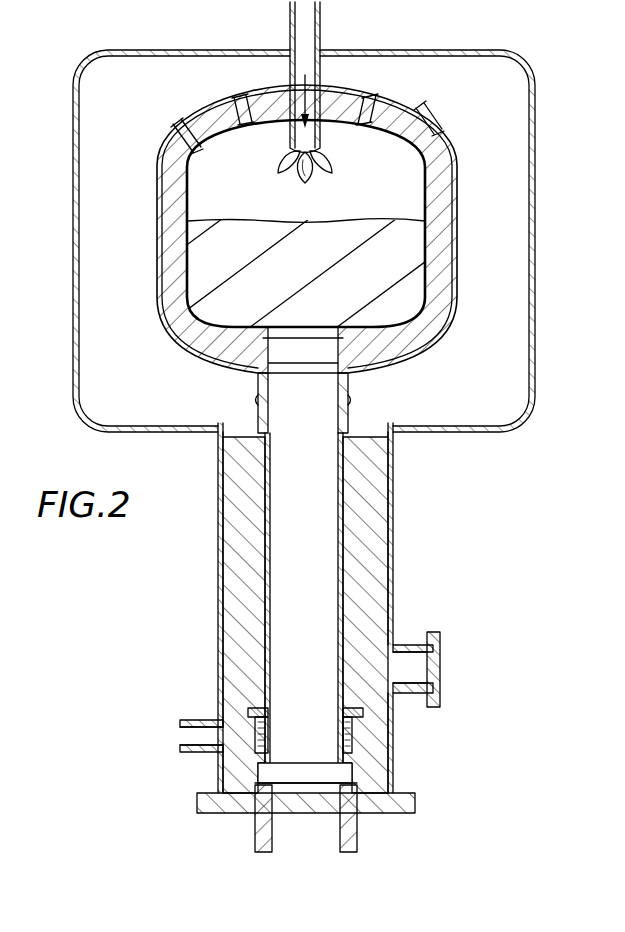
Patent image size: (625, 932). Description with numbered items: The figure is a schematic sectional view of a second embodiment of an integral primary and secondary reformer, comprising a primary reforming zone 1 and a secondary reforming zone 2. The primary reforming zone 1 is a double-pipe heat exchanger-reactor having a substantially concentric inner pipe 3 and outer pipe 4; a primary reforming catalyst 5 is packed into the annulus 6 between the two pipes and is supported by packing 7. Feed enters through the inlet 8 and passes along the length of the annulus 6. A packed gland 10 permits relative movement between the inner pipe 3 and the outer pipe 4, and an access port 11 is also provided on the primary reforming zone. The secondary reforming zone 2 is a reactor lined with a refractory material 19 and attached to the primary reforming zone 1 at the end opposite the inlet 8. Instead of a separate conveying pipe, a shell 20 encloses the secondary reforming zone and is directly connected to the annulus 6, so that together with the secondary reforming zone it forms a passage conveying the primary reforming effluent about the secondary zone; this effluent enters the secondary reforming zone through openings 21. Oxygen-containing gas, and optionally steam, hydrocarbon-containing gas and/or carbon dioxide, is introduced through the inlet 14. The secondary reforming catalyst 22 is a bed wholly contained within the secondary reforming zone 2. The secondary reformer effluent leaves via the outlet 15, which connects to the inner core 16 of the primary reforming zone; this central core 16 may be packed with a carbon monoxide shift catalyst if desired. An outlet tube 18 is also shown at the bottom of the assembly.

The primary reforming zone 1 is at (425, 580).
The secondary reforming zone 2 is at (60, 238).
The inner pipe 3 is at (267, 610).
The outer pipe 4 is at (220, 573).
The primary reforming catalyst 5 is at (368, 538).
The annulus 6 is at (373, 435).
The packing 7 is at (378, 770).
The inlet 8 is at (195, 735).
The packed gland 10 is at (352, 737).
The access port 11 is at (440, 658).
The inlet 14 is at (305, 43).
The outlet 15 is at (277, 350).
The inner core 16 is at (318, 515).
The outlet tube 18 is at (298, 842).
The refractory material 19 is at (440, 258).
The shell 20 is at (538, 254).
The openings 21 is at (238, 97).
The secondary reforming catalyst 22 is at (319, 260).